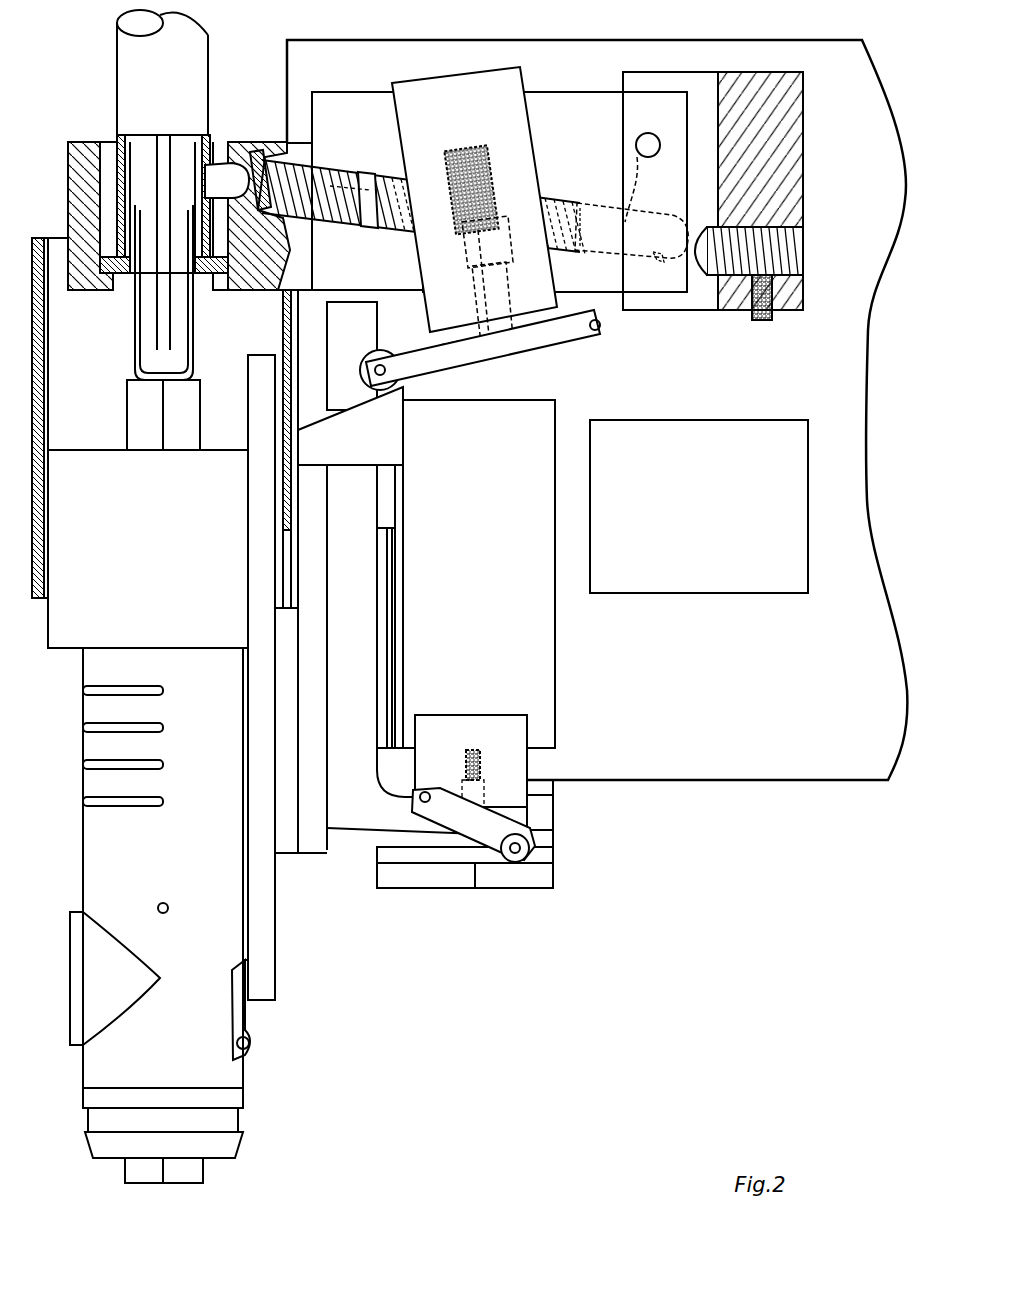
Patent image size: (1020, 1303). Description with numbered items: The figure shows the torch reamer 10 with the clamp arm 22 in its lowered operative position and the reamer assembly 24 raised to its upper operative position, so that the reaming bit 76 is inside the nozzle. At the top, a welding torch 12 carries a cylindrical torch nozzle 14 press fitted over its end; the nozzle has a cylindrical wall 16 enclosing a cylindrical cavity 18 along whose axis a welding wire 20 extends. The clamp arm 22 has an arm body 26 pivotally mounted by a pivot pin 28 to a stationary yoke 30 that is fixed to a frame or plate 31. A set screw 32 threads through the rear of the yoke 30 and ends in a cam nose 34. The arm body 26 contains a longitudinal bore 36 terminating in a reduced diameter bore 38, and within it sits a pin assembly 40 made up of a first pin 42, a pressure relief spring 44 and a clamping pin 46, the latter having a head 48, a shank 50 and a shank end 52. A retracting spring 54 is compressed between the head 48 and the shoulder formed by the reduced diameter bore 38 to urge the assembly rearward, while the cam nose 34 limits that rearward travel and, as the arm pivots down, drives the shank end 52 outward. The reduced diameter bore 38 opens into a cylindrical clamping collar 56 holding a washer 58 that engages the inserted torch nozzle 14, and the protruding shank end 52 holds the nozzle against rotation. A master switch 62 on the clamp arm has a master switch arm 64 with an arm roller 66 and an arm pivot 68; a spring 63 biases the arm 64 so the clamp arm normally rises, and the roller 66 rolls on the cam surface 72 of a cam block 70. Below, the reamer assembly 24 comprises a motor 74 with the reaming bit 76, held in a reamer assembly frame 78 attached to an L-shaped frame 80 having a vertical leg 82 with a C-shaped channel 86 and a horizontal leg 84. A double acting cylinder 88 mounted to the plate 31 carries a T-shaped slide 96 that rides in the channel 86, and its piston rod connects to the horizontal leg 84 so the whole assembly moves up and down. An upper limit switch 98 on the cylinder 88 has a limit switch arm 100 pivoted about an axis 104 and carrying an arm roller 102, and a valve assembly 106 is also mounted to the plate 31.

The torch reamer 10 is at (820, 900).
The welding torch 12 is at (214, 30).
The torch nozzle 14 is at (222, 110).
The cylindrical wall 16 is at (135, 185).
The cylindrical cavity 18 is at (120, 192).
The welding wire 20 is at (160, 322).
The clamp arm 22 is at (297, 143).
The reamer assembly 24 is at (243, 1156).
The arm body 26 is at (555, 100).
The pivot pin 28 is at (638, 143).
The stationary yoke 30 is at (690, 75).
The plate 31 is at (806, 36).
The set screw 32 is at (700, 245).
The cam nose 34 is at (700, 298).
The longitudinal bore 36 is at (470, 252).
The reduced diameter bore 38 is at (250, 165).
The pin assembly 40 is at (657, 262).
The first pin 42 is at (636, 156).
The pressure relief spring 44 is at (565, 200).
The clamping pin 46 is at (393, 182).
The head 48 is at (365, 222).
The shank 50 is at (335, 172).
The shank end 52 is at (216, 180).
The retracting spring 54 is at (312, 246).
The clamping collar 56 is at (68, 142).
The washer 58 is at (215, 282).
The master switch 62 is at (507, 97).
The spring 63 is at (478, 150).
The master switch arm 64 is at (432, 334).
The arm roller 66 is at (368, 362).
The arm pivot 68 is at (596, 331).
The cam block 70 is at (348, 452).
The cam surface 72 is at (345, 400).
The motor 74 is at (83, 852).
The reaming bit 76 is at (136, 348).
The reamer assembly frame 78 is at (118, 575).
The L-shaped frame 80 is at (357, 822).
The vertical leg 82 is at (375, 644).
The horizontal leg 84 is at (565, 790).
The C-shaped channel 86 is at (395, 510).
The double acting cylinder 88 is at (560, 495).
The T-shaped slide 96 is at (392, 580).
The upper limit switch 98 is at (520, 748).
The limit switch arm 100 is at (540, 814).
The arm roller 102 is at (520, 858).
The axis 104 is at (426, 792).
The valve assembly 106 is at (785, 420).